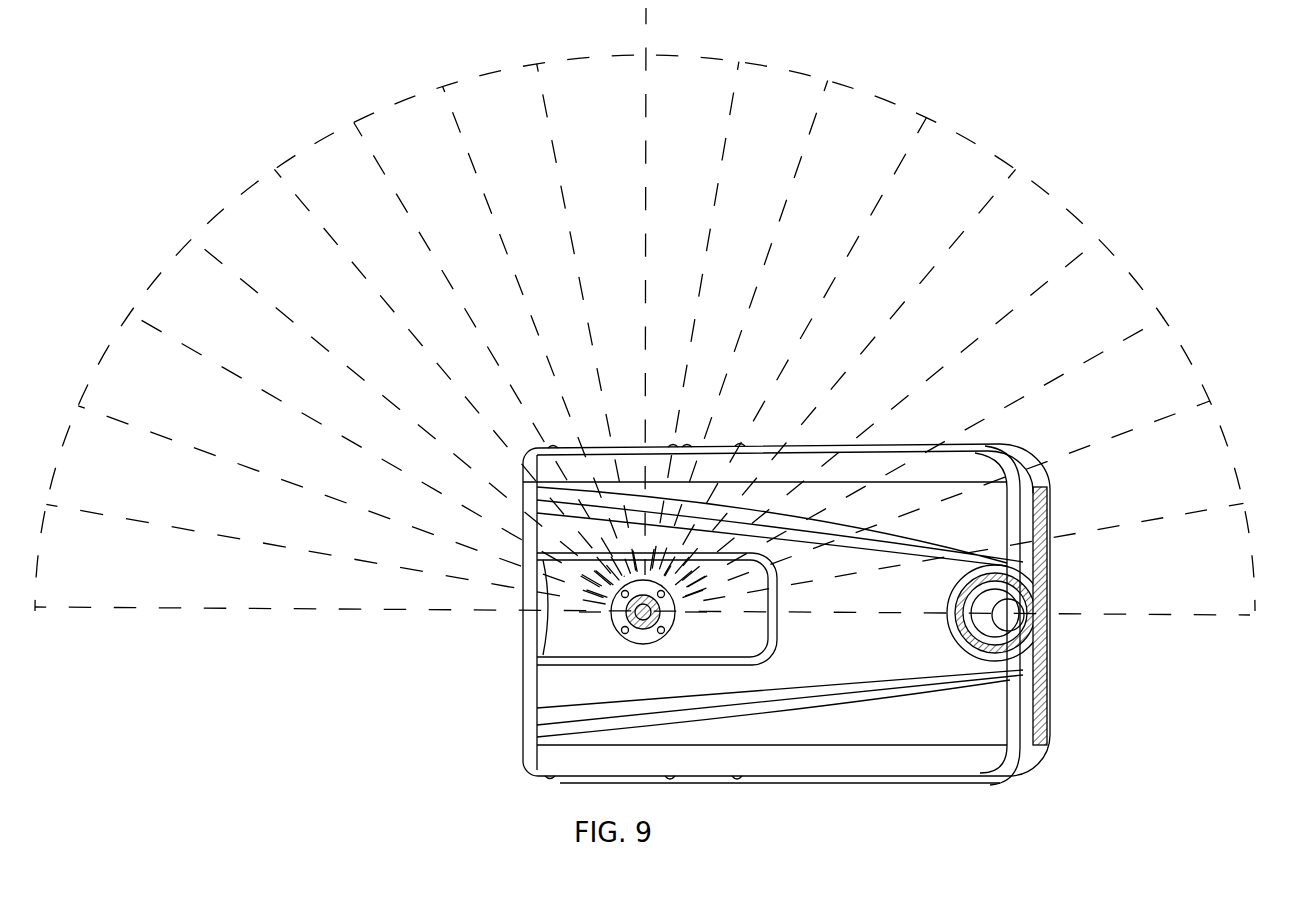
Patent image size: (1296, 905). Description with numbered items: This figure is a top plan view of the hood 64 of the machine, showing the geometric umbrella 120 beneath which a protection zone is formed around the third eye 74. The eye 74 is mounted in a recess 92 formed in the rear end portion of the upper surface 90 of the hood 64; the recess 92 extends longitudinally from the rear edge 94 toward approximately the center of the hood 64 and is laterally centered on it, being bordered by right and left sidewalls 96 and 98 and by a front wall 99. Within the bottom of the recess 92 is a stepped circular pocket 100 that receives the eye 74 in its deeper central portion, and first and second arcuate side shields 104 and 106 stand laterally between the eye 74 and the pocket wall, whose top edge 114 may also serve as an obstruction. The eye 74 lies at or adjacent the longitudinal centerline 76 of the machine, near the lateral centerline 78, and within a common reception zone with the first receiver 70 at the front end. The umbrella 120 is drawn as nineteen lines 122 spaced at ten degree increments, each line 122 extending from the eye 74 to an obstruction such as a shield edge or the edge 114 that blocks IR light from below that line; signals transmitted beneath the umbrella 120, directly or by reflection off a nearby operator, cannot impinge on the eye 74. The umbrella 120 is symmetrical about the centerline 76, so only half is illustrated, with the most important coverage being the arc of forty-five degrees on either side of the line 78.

The hood 64 is at (1080, 736).
The first receiver 70 is at (1045, 632).
The third eye 74 is at (667, 634).
The longitudinal centerline 76 is at (246, 613).
The lateral centerline 78 is at (651, 108).
The upper surface 90 is at (850, 652).
The recess 92 is at (737, 650).
The rear edge 94 is at (523, 643).
The right sidewall 96 is at (537, 665).
The left sidewall 98 is at (546, 562).
The front wall 99 is at (771, 636).
The pocket 100 is at (656, 641).
The first arcuate side shield 104 is at (645, 642).
The second arcuate side shield 106 is at (622, 636).
The top edge of the pocket wall 114 is at (636, 641).
The umbrella 120 is at (1156, 266).
The lines 122 is at (309, 209).